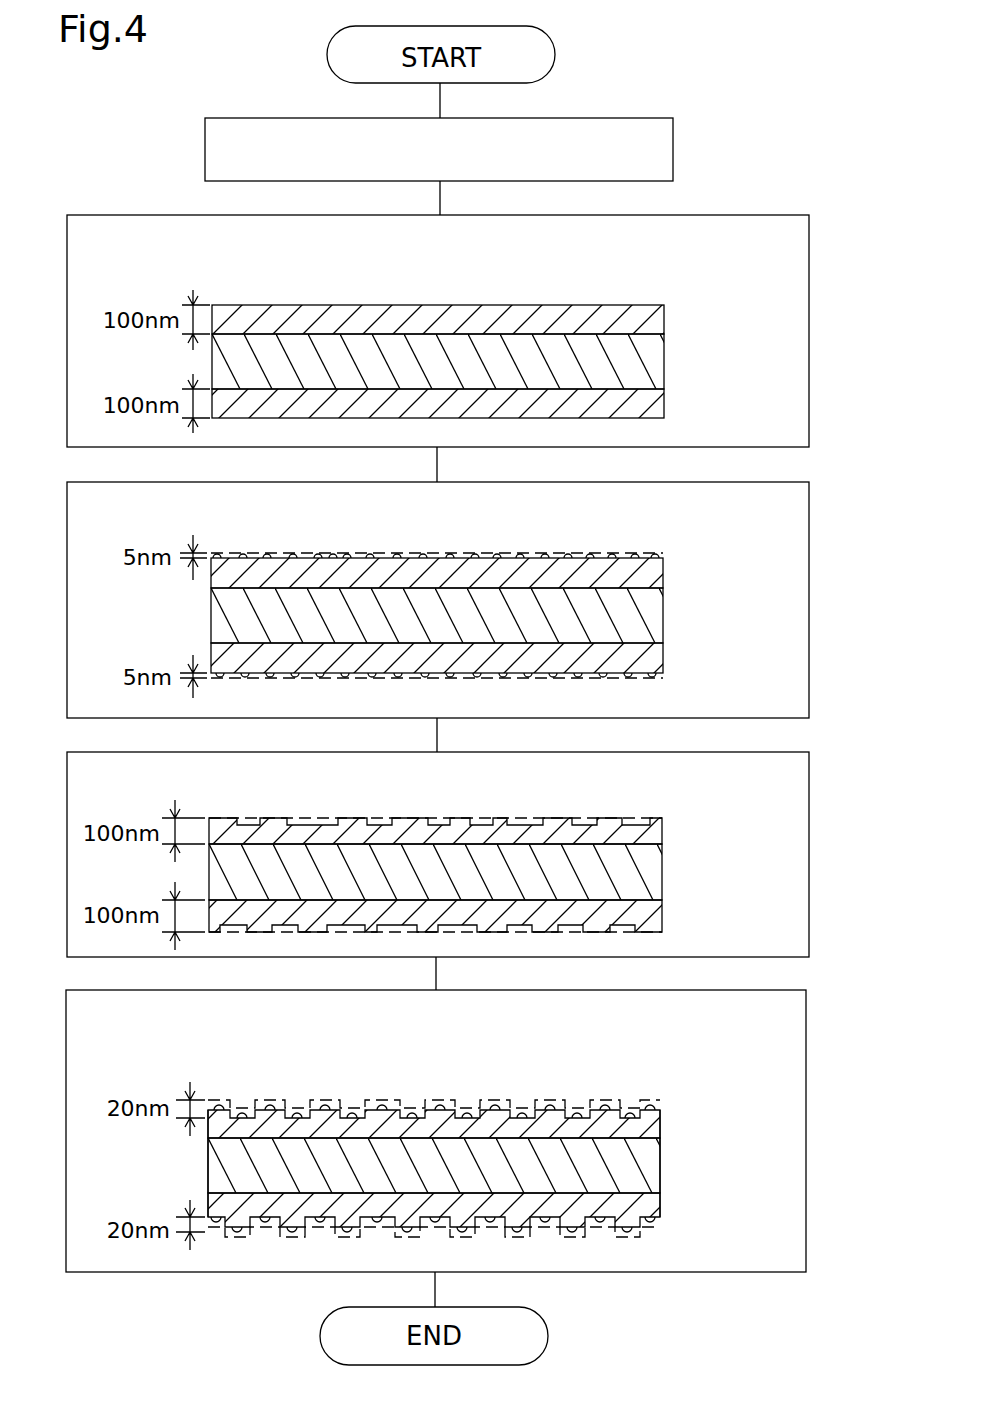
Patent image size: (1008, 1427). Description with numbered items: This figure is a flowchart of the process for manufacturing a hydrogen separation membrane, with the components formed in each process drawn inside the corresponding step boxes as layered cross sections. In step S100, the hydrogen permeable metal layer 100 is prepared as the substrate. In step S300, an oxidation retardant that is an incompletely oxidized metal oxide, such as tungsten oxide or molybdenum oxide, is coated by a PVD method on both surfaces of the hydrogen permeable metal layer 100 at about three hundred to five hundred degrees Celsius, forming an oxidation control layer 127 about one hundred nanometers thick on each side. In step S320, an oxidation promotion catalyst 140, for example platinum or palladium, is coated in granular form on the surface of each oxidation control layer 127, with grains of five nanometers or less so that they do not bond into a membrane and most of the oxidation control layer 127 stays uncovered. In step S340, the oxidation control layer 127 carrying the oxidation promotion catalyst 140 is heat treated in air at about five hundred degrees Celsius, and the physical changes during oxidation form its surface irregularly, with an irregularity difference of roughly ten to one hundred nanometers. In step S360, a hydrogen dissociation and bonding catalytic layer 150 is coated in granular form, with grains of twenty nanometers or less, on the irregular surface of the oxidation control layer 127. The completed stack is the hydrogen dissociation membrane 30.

The hydrogen dissociation membrane 30 is at (691, 1077).
The hydrogen permeable metal layer 100 is at (664, 359).
The oxidation control layer 127 is at (664, 318).
The oxidation promotion catalyst 140 is at (663, 557).
The hydrogen dissociation and bonding catalytic layer 150 is at (660, 1108).
The step of preparing hydrogen permeable metal layer S100 is at (673, 143).
The step of coating oxidation retardant S300 is at (809, 343).
The step of coating oxidation promotion catalyst S320 is at (809, 601).
The step of oxidation by heat treatment S340 is at (809, 855).
The step of coating hydrogen dissociation and bonding catalytic metal S360 is at (806, 1111).